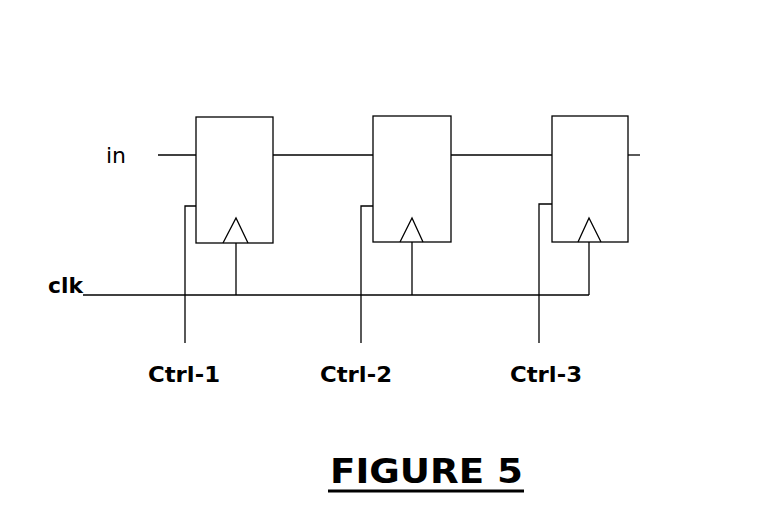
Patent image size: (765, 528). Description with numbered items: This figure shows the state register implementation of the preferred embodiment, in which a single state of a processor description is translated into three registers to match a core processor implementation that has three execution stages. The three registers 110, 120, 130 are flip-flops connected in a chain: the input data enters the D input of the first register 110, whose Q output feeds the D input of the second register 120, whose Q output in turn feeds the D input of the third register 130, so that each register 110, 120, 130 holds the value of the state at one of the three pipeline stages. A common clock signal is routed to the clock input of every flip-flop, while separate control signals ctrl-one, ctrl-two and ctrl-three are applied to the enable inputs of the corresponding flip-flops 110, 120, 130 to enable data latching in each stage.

The register 110 is at (249, 97).
The register 120 is at (418, 97).
The register 130 is at (594, 95).